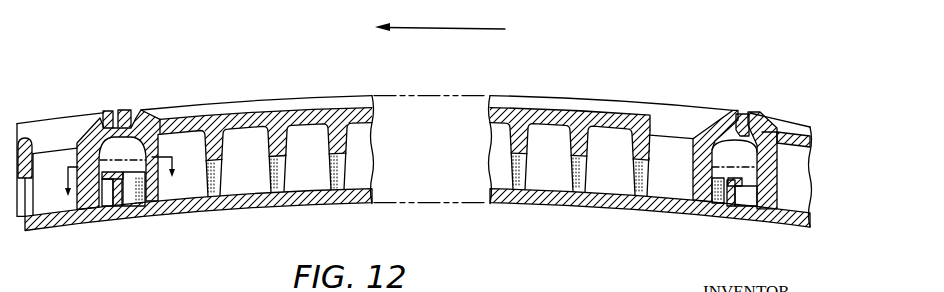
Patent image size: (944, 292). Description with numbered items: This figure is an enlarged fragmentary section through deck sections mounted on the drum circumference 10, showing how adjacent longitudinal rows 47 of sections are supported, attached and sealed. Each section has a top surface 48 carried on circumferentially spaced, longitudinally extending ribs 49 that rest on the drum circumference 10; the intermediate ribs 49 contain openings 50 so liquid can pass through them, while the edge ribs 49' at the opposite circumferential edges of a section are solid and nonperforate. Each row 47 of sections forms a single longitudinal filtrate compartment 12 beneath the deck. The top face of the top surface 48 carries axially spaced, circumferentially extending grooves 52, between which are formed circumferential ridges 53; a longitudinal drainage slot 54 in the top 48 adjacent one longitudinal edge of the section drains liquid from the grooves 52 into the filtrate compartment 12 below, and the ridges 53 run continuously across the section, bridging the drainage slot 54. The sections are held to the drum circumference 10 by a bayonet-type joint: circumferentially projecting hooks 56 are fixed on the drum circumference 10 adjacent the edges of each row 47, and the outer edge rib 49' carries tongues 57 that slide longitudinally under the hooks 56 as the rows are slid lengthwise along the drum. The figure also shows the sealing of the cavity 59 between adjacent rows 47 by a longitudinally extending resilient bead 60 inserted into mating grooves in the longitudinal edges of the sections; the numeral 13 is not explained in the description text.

The drum circumference 10 is at (607, 200).
The filtrate compartment 12 is at (542, 178).
The seal 13 is at (118, 182).
The longitudinal row 47 is at (312, 110).
The top surface 48 is at (593, 117).
The rib 49 is at (268, 188).
The edge rib 49' is at (441, 220).
The opening 50 is at (335, 163).
The groove 52 is at (247, 110).
The circumferential ridge 53 is at (667, 110).
The longitudinal drainage slot 54 is at (678, 138).
The hook 56 is at (748, 180).
The tongue 57 is at (752, 196).
The cavity 59 is at (143, 122).
The resilient bead 60 is at (116, 125).